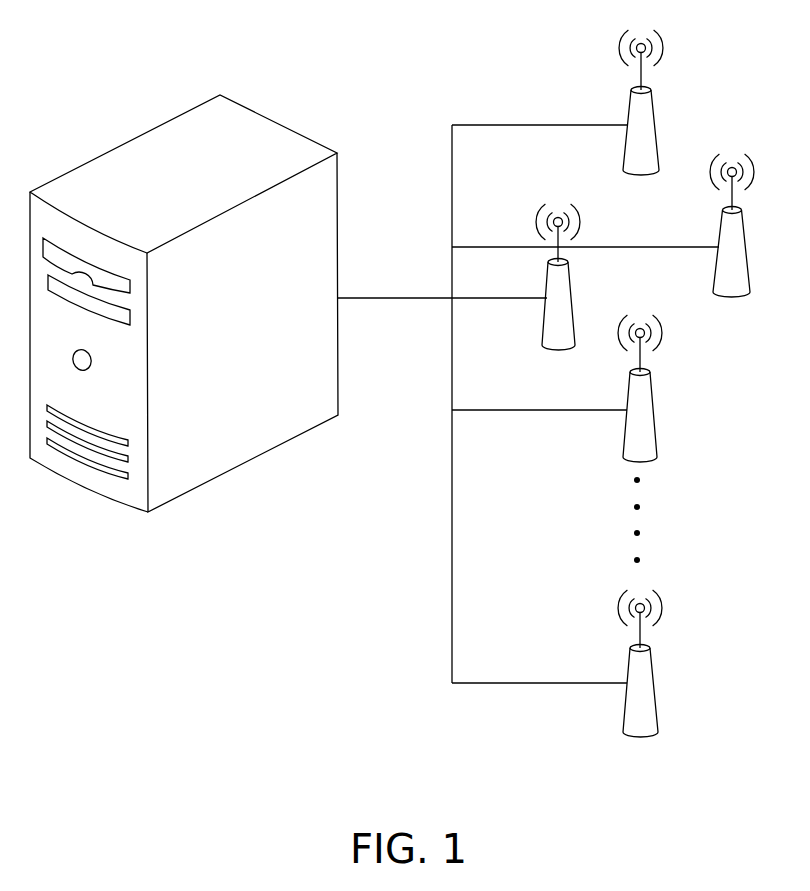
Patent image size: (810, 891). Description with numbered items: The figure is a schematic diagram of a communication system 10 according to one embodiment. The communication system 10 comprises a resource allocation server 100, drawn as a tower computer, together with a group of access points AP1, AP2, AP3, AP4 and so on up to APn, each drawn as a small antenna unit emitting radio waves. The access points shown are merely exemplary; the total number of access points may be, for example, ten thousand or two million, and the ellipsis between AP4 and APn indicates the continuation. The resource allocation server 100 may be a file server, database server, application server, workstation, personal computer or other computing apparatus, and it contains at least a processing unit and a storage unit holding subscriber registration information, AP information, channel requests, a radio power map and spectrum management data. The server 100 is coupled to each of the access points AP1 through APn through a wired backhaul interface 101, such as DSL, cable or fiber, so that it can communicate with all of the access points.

The communication system 10 is at (747, 797).
The resource allocation server 100 is at (250, 445).
The wired backhaul interface 101 is at (398, 298).
The access point AP1 is at (542, 323).
The access point AP2 is at (627, 105).
The access point AP3 is at (720, 233).
The access point AP4 is at (655, 423).
The access point APn is at (655, 698).